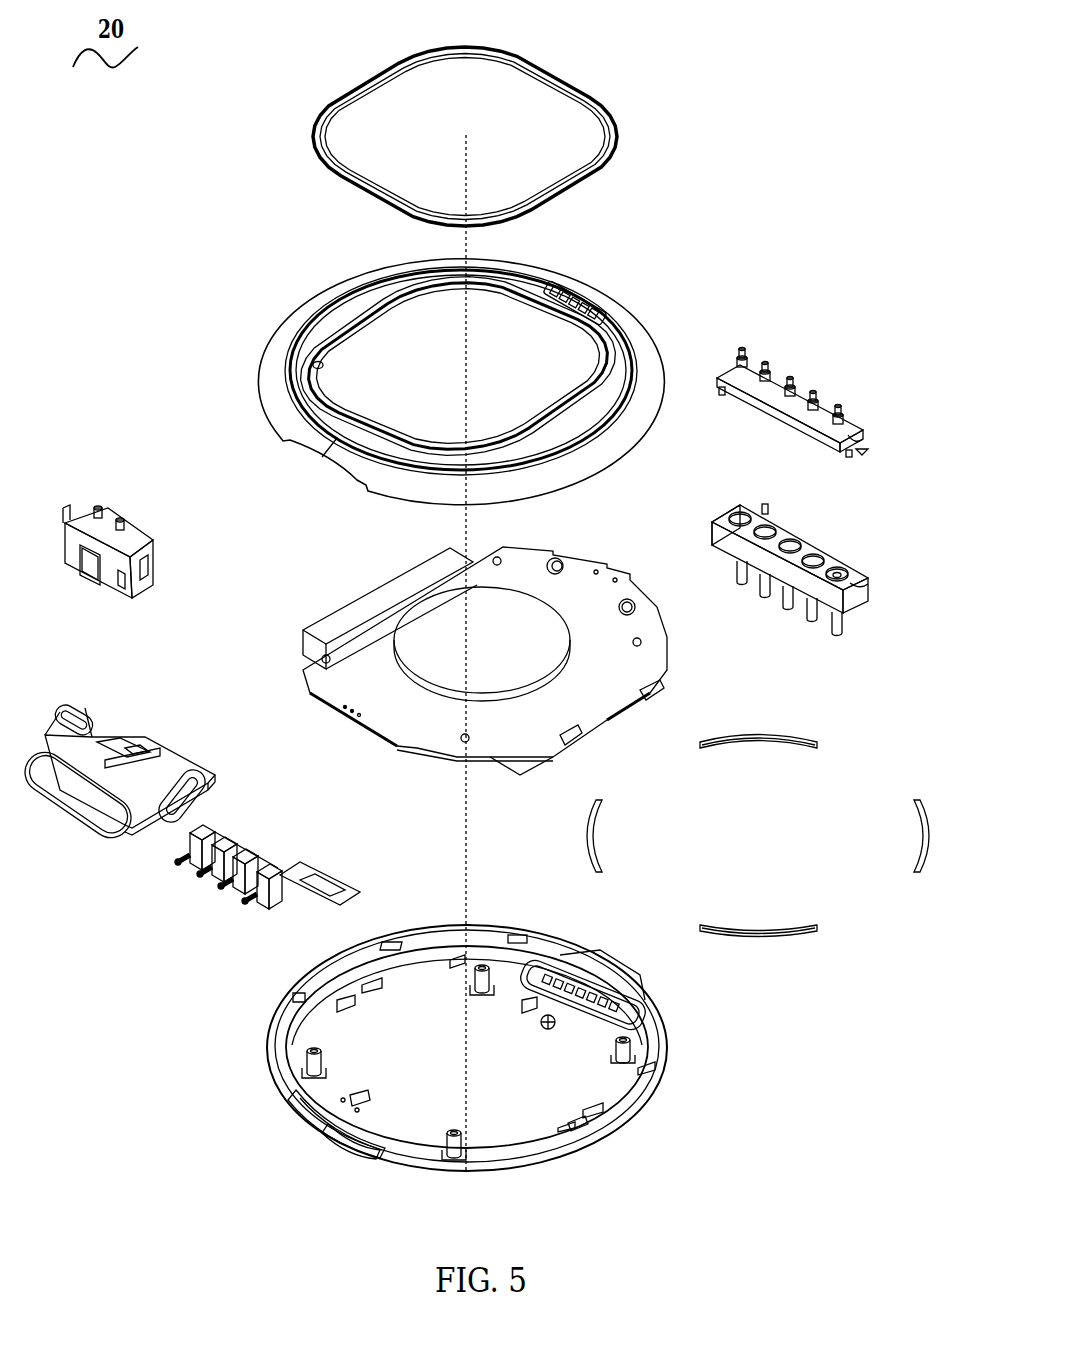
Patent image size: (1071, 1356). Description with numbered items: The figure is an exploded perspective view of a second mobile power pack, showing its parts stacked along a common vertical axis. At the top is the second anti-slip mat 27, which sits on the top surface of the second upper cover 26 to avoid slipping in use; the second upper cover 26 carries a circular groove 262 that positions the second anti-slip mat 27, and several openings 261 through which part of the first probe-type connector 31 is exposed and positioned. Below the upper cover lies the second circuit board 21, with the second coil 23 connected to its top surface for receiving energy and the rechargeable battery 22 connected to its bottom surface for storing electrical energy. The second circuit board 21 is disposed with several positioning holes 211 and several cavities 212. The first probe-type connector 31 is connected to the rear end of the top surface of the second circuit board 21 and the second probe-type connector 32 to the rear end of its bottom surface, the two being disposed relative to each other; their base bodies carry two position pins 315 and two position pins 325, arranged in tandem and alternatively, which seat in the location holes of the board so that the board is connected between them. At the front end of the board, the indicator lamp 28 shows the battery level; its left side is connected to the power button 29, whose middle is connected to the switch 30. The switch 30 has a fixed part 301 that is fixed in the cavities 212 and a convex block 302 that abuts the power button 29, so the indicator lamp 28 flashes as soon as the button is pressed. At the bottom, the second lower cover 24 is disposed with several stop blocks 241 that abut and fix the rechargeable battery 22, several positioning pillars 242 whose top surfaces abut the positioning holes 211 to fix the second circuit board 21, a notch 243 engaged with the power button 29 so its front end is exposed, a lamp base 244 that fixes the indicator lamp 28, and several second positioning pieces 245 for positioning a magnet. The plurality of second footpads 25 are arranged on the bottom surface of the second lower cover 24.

The second circuit board 21 is at (470, 661).
The positioning holes 211 is at (325, 660).
The cavities 212 is at (352, 712).
The rechargeable battery 22 is at (303, 636).
The second coil 23 is at (418, 632).
The second lower cover 24 is at (541, 1084).
The stop blocks 241 is at (572, 1128).
The positioning pillars 242 is at (632, 1060).
The notch 243 is at (320, 1120).
The lamp base 244 is at (357, 1147).
The second positioning pieces 245 is at (655, 1005).
The second footpads 25 is at (790, 930).
The second upper cover 26 is at (527, 365).
The openings 261 is at (560, 302).
The circular groove 262 is at (607, 370).
The second anti-slip mat 27 is at (605, 130).
The indicator lamp 28 is at (213, 880).
The power button 29 is at (87, 818).
The switch 30 is at (130, 538).
The fixed part 301 is at (122, 522).
The convex block 302 is at (95, 568).
The first probe-type connector 31 is at (752, 385).
The position pins 315 is at (862, 452).
The second probe-type connector 32 is at (853, 592).
The position pins 325 is at (835, 588).